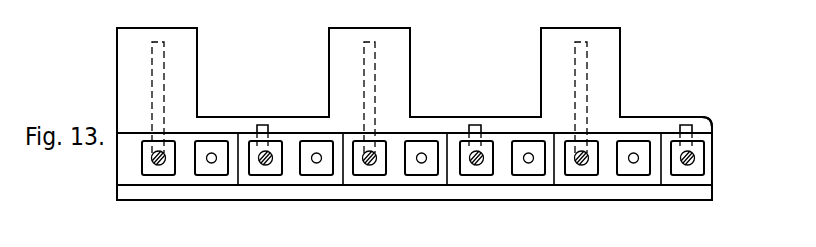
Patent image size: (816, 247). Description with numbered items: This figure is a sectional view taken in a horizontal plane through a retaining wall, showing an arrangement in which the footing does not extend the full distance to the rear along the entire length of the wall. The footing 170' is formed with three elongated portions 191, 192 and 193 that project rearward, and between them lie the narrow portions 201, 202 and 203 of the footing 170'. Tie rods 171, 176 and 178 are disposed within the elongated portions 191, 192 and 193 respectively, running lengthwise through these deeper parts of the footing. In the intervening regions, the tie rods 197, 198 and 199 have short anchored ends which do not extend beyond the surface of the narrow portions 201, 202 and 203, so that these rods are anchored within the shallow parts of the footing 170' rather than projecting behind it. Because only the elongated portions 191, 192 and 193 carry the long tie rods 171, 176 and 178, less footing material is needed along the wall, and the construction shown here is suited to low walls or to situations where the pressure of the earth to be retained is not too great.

The footing 170' is at (394, 114).
The elongated portion 191 is at (117, 48).
The elongated portion 192 is at (335, 70).
The elongated portion 193 is at (541, 72).
The tie rod 171 is at (164, 73).
The tie rod 176 is at (375, 78).
The tie rod 178 is at (587, 72).
The tie rod 197 is at (268, 124).
The tie rod 198 is at (497, 103).
The tie rod 199 is at (679, 127).
The narrow portion 201 is at (213, 125).
The narrow portion 202 is at (422, 126).
The narrow portion 203 is at (695, 124).